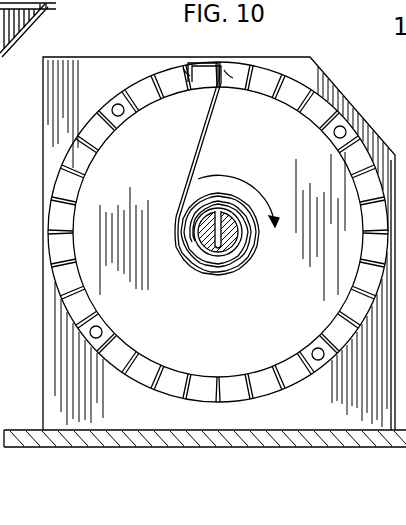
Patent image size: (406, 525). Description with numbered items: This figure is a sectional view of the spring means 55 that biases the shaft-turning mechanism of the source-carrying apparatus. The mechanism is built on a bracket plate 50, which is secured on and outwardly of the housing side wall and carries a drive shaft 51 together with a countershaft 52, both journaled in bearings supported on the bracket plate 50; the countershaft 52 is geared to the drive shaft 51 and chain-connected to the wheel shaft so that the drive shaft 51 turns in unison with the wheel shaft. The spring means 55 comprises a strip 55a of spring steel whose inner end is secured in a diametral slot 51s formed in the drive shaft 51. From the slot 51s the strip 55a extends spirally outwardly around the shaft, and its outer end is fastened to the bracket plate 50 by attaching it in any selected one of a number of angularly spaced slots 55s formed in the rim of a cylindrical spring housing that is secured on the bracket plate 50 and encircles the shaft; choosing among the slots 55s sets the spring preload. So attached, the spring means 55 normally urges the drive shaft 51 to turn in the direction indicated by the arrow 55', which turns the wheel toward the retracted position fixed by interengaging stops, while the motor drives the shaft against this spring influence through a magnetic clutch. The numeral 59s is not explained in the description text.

The bracket plate 50 is at (358, 434).
The drive shaft 51 is at (230, 247).
The diametral slot 51s is at (219, 236).
The countershaft 52 is at (39, 19).
The spring means 55 is at (218, 168).
The arrow 55' is at (242, 184).
The strip of spring steel 55a is at (187, 166).
The angularly spaced slots 55s is at (176, 80).
The slot 59s is at (372, 5).